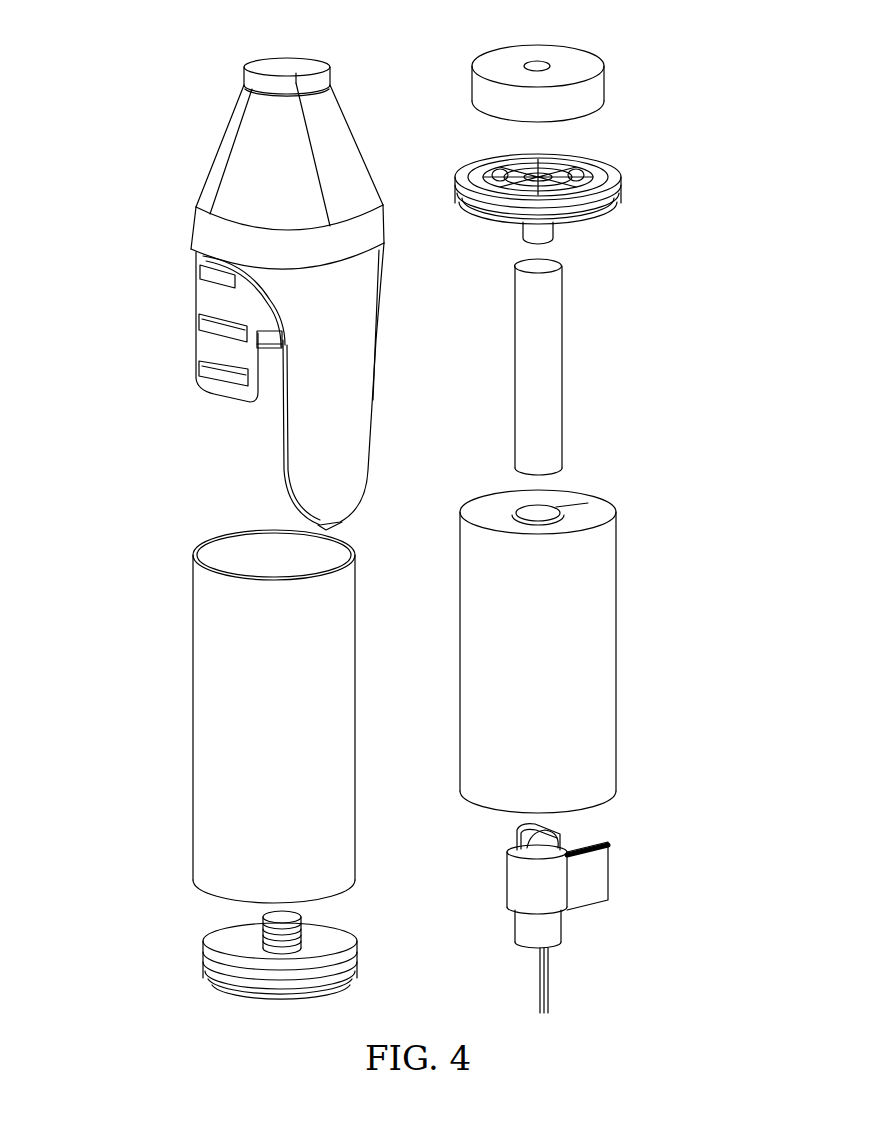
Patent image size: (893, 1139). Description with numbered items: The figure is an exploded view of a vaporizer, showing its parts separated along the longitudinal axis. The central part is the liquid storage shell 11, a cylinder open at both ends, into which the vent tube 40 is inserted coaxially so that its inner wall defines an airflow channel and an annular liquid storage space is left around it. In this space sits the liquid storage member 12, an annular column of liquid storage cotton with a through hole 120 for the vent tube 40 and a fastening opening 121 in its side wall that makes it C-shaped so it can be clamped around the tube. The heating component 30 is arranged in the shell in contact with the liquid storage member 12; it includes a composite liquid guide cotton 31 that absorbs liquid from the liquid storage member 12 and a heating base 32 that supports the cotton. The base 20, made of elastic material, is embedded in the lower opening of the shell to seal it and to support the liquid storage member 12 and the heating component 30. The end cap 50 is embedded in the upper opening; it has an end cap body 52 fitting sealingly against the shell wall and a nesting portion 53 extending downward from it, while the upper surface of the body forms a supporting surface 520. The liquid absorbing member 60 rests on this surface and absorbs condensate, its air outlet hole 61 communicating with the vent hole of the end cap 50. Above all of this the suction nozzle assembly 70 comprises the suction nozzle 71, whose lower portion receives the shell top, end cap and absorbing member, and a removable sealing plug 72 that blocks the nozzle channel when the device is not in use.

The liquid storage shell 11 is at (192, 717).
The liquid storage member 12 is at (562, 630).
The through hole 120 is at (524, 512).
The fastening opening 121 is at (586, 506).
The base 20 is at (215, 960).
The heating component 30 is at (577, 915).
The composite liquid guide cotton 31 is at (510, 880).
The heating base 32 is at (533, 925).
The vent tube 40 is at (565, 365).
The end cap 50 is at (534, 197).
The end cap body 52 is at (610, 203).
The nesting portion 53 is at (552, 236).
The supporting surface 520 is at (476, 176).
The liquid absorbing member 60 is at (571, 68).
The air outlet hole 61 is at (528, 63).
The suction nozzle assembly 70 is at (235, 273).
The suction nozzle 71 is at (212, 185).
The sealing plug 72 is at (258, 70).